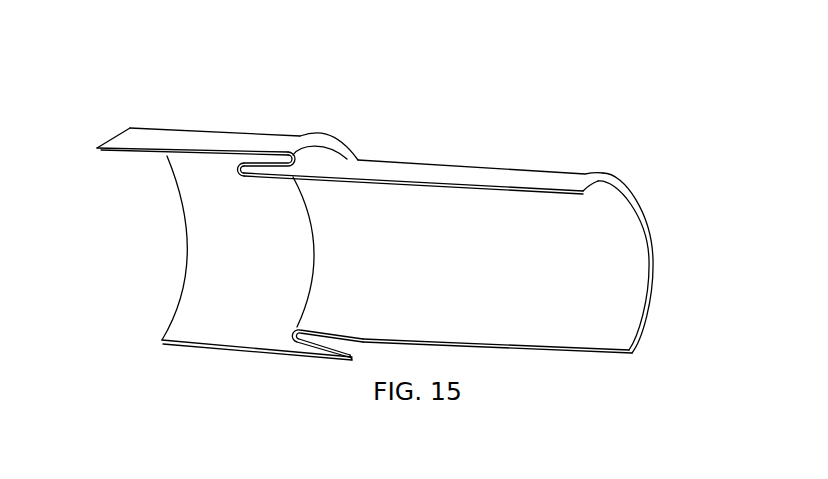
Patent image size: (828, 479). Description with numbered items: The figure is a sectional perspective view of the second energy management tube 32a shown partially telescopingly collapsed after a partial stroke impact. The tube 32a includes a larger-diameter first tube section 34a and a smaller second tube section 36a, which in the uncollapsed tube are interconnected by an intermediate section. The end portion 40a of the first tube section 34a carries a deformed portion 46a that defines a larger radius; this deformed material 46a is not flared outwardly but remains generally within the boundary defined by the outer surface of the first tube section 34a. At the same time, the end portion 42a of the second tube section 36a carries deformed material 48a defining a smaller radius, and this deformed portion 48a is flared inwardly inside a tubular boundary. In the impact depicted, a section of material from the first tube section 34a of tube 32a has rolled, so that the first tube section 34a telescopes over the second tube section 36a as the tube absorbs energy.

The second energy management tube 32a is at (375, 201).
The first tube section 34a is at (177, 127).
The second tube section 36a is at (470, 166).
The end portion 40a is at (346, 131).
The end portion 42a is at (251, 178).
The deformed portion 46a is at (291, 156).
The deformed material 48a is at (238, 171).